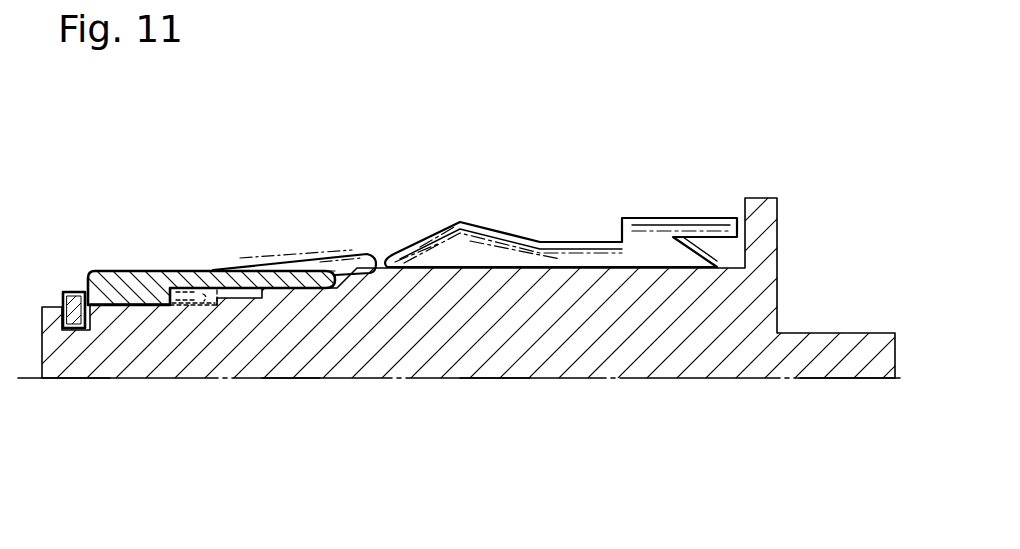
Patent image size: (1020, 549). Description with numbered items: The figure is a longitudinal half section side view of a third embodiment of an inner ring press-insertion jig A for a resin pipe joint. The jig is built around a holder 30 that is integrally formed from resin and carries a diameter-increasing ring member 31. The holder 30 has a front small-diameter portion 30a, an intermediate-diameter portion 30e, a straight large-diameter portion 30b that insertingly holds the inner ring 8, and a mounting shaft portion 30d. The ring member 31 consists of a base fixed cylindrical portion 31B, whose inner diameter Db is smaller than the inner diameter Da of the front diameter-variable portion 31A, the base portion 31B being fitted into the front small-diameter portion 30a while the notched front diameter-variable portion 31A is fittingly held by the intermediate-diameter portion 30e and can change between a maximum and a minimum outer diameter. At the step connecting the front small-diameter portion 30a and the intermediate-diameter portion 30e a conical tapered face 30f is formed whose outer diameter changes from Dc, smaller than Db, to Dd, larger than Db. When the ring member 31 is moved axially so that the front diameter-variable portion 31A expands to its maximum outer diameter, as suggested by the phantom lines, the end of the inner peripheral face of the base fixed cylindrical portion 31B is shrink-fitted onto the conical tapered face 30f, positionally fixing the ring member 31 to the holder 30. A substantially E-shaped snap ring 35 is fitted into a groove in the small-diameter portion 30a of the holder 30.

The inner ring 8 is at (500, 247).
The holder 30 is at (603, 380).
The front small-diameter portion 30a is at (72, 378).
The large-diameter portion 30b is at (493, 378).
The mounting shaft portion 30d is at (835, 378).
The intermediate-diameter portion 30e is at (290, 378).
The conical tapered face 30f is at (195, 292).
The diameter-increasing ring member 31 is at (223, 199).
The front diameter-variable portion 31A is at (318, 257).
The base fixed cylindrical portion 31B is at (125, 271).
The snap ring 35 is at (63, 292).
The inner ring press-insertion jig A is at (484, 207).
The inner diameter of the front diameter-variable portion Da is at (185, 291).
The inner diameter of the base fixed cylindrical portion Db is at (135, 306).
The smaller outer diameter of the conical tapered face Dc is at (221, 307).
The larger outer diameter of the conical tapered face Dd is at (248, 299).